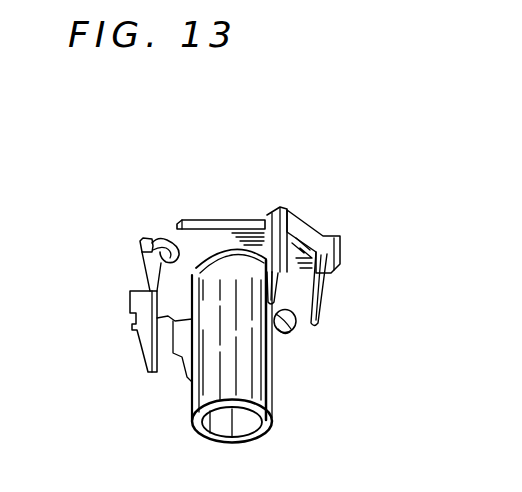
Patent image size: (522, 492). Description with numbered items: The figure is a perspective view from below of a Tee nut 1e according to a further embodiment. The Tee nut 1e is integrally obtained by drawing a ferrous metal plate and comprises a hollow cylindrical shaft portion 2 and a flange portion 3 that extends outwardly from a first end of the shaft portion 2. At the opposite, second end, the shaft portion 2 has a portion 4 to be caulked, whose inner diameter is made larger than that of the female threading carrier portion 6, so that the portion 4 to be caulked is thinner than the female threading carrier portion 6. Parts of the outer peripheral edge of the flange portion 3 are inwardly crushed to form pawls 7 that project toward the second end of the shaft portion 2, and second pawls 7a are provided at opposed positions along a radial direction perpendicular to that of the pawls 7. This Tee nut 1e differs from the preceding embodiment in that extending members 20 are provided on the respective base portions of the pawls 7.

The Tee nut 1e is at (203, 119).
The shaft portion 2 is at (273, 375).
The flange portion 3 is at (231, 220).
The portion to be caulked 4 is at (270, 408).
The female threading carrier portion 6 is at (217, 277).
The pawls 7 is at (290, 277).
The second pawls 7a is at (162, 242).
The extending members 20 is at (288, 208).